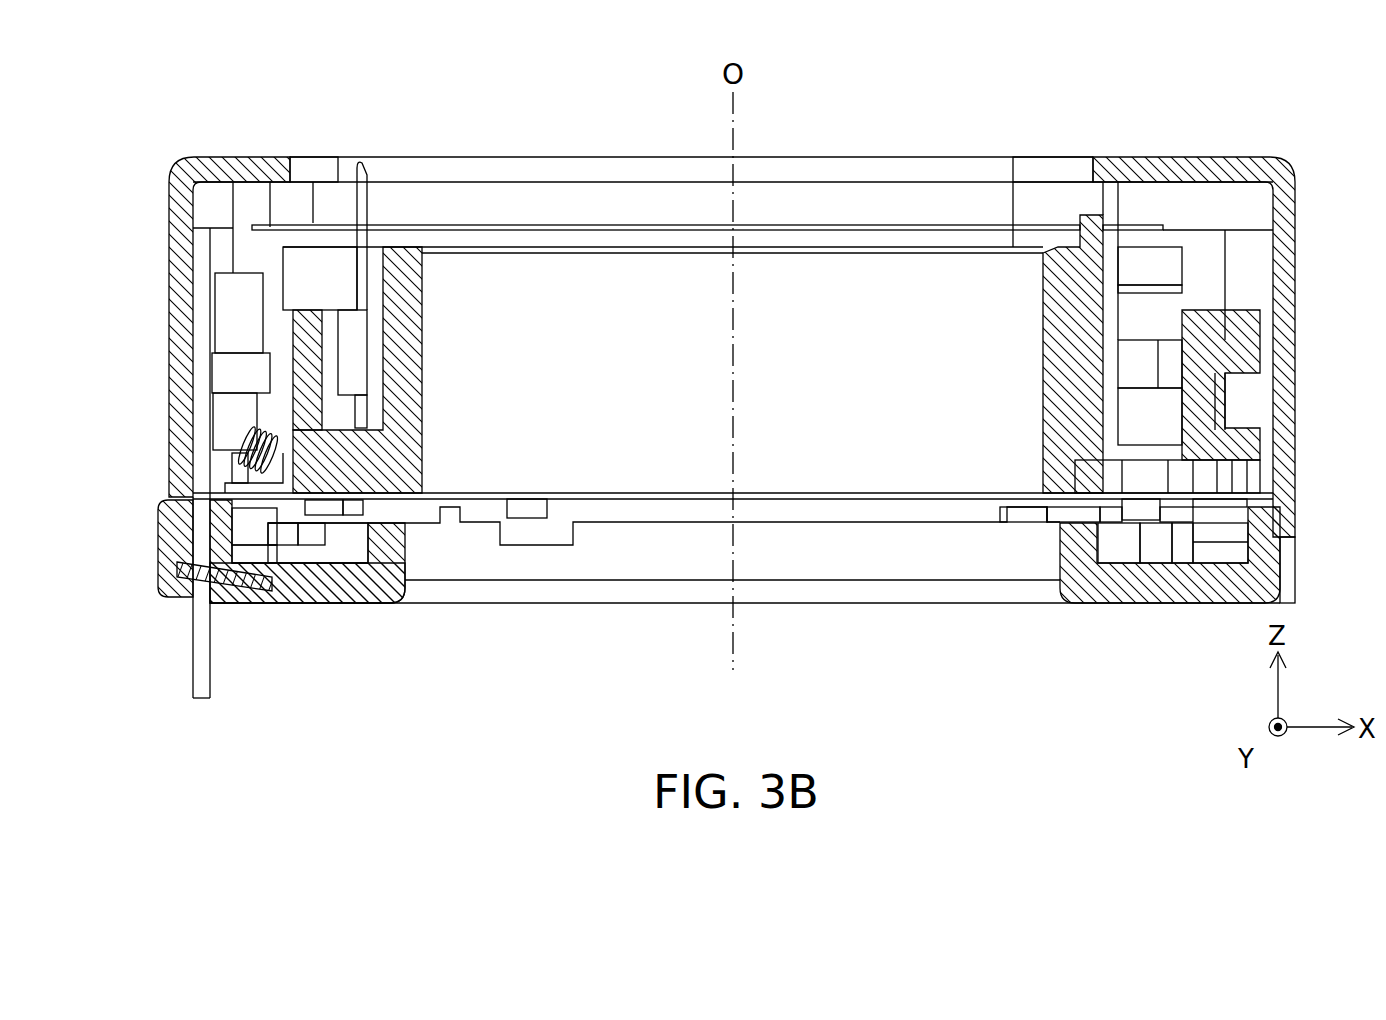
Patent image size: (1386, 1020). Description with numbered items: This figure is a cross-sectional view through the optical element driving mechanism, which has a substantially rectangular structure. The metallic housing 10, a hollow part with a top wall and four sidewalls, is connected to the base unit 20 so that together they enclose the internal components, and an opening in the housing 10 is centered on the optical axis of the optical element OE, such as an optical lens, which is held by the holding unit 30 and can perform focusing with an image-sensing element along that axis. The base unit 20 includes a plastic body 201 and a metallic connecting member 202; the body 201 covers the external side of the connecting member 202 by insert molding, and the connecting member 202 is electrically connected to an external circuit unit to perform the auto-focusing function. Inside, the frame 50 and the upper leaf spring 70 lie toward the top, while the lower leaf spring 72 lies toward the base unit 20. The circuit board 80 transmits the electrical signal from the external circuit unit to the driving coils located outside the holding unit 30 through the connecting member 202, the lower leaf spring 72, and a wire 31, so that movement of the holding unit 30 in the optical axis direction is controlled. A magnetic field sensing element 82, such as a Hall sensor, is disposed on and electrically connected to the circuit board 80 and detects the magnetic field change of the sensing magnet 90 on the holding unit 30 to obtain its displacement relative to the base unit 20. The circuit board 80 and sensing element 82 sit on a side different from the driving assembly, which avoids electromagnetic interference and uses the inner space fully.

The housing 10 is at (182, 292).
The base unit 20 is at (362, 608).
The body 201 is at (295, 585).
The connecting member 202 is at (178, 569).
The holding unit 30 is at (1068, 292).
The wire 31 is at (245, 460).
The frame 50 is at (212, 202).
The upper leaf spring 70 is at (212, 228).
The lower leaf spring 72 is at (255, 497).
The circuit board 80 is at (200, 349).
The magnetic field sensing element 82 is at (235, 413).
The sensing magnet 90 is at (1162, 410).
The optical element OE is at (930, 450).